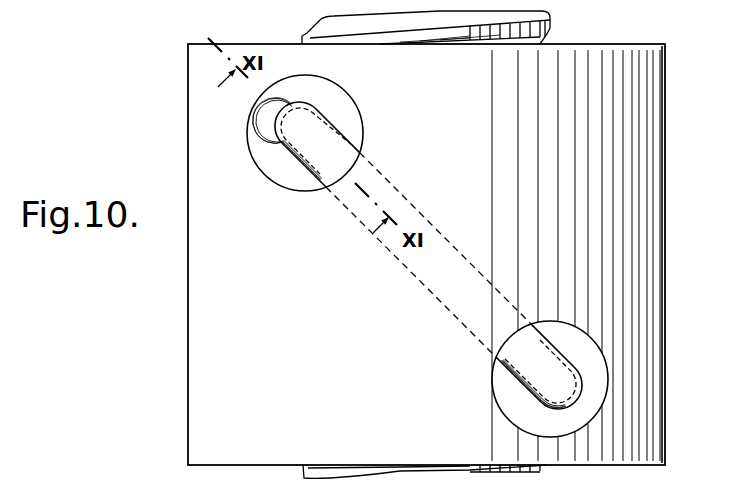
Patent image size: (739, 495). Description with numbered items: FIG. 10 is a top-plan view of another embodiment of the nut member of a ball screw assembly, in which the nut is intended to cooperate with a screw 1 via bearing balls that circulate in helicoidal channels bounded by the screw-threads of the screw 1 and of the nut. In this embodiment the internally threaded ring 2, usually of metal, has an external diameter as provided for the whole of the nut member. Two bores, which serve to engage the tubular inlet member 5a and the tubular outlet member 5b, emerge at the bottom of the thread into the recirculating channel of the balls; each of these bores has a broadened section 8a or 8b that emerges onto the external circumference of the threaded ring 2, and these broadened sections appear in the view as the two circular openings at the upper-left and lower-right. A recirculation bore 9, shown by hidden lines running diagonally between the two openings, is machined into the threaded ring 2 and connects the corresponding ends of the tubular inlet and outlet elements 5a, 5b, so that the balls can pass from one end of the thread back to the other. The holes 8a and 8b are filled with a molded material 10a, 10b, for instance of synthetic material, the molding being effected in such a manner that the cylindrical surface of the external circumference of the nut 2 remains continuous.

The screw 1 is at (549, 18).
The threaded ring 2 is at (666, 72).
The tubular inlet member 5a is at (347, 136).
The tubular outlet member 5b is at (577, 368).
The broadened section 8a is at (309, 131).
The broadened section 8b is at (571, 365).
The recirculation bore 9 is at (459, 256).
The molded material 10a is at (266, 172).
The molded material 10b is at (600, 408).